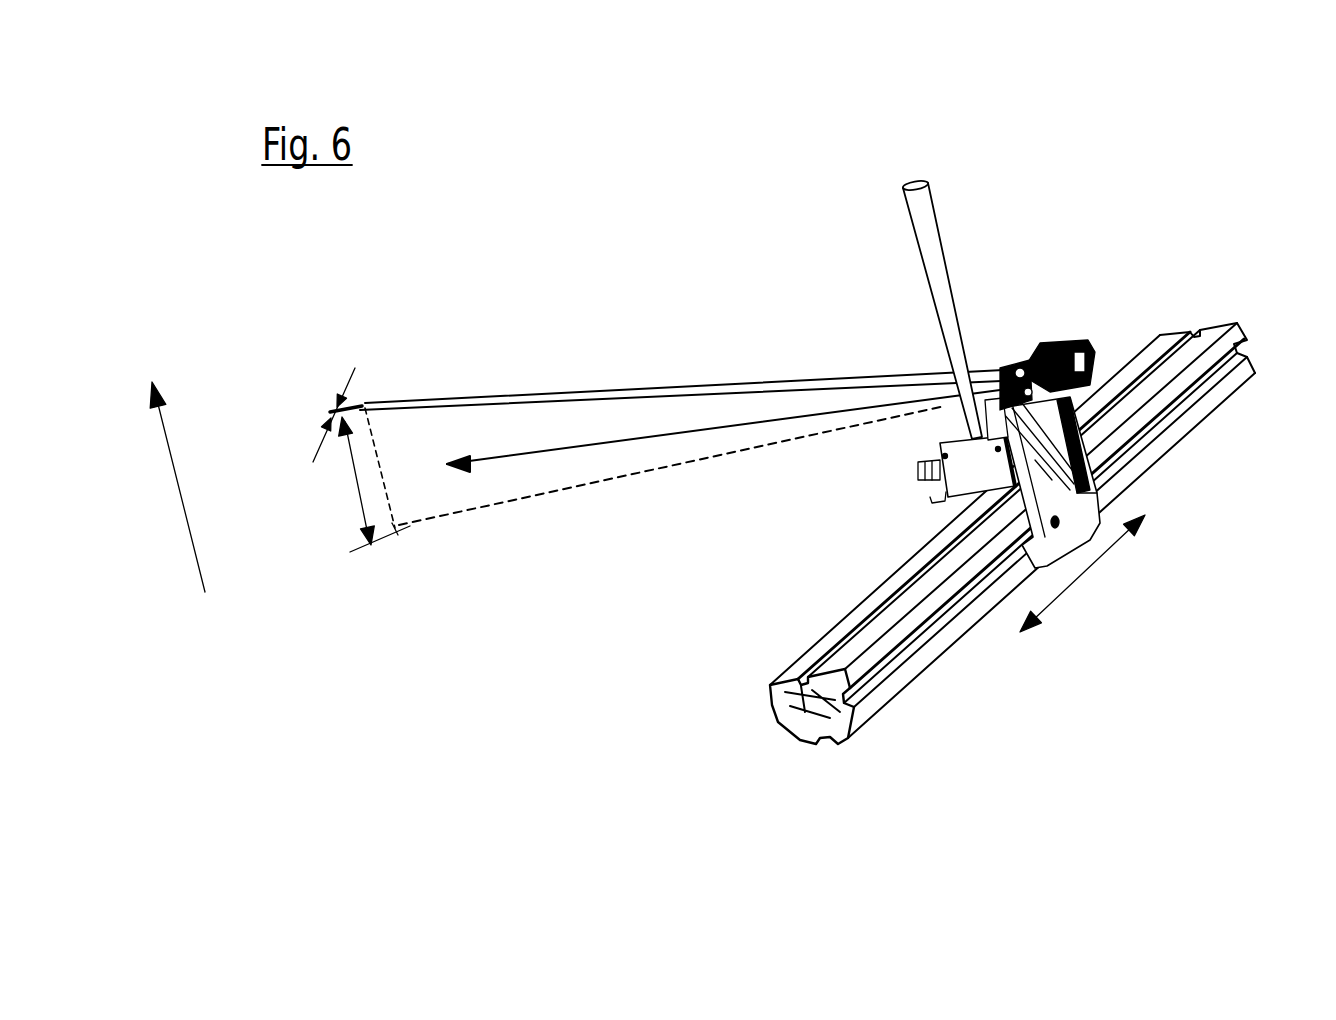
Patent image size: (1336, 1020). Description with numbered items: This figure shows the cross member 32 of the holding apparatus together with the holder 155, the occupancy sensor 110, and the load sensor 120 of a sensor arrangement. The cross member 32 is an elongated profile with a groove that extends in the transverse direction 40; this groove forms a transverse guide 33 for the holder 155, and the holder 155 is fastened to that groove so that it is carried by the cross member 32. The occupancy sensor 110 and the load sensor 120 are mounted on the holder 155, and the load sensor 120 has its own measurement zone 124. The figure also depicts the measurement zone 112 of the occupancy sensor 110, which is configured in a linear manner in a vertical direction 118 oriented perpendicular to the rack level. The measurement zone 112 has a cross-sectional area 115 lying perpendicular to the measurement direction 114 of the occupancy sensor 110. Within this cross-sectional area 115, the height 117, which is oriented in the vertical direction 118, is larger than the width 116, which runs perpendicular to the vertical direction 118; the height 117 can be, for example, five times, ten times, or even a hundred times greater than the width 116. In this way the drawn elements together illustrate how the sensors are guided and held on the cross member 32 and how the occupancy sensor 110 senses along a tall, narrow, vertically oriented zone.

The cross member 32 is at (1215, 408).
The transverse guide 33 is at (923, 637).
The transverse direction 40 is at (1088, 573).
The occupancy sensor 110 is at (1062, 345).
The measurement zone 112 is at (560, 392).
The measurement direction 114 is at (625, 442).
The cross-sectional area 115 is at (383, 473).
The width 116 is at (328, 408).
The height 117 is at (357, 485).
The vertical direction 118 is at (178, 488).
The load sensor 120 is at (950, 500).
The measurement zone 124 is at (947, 248).
The holder 155 is at (1092, 478).